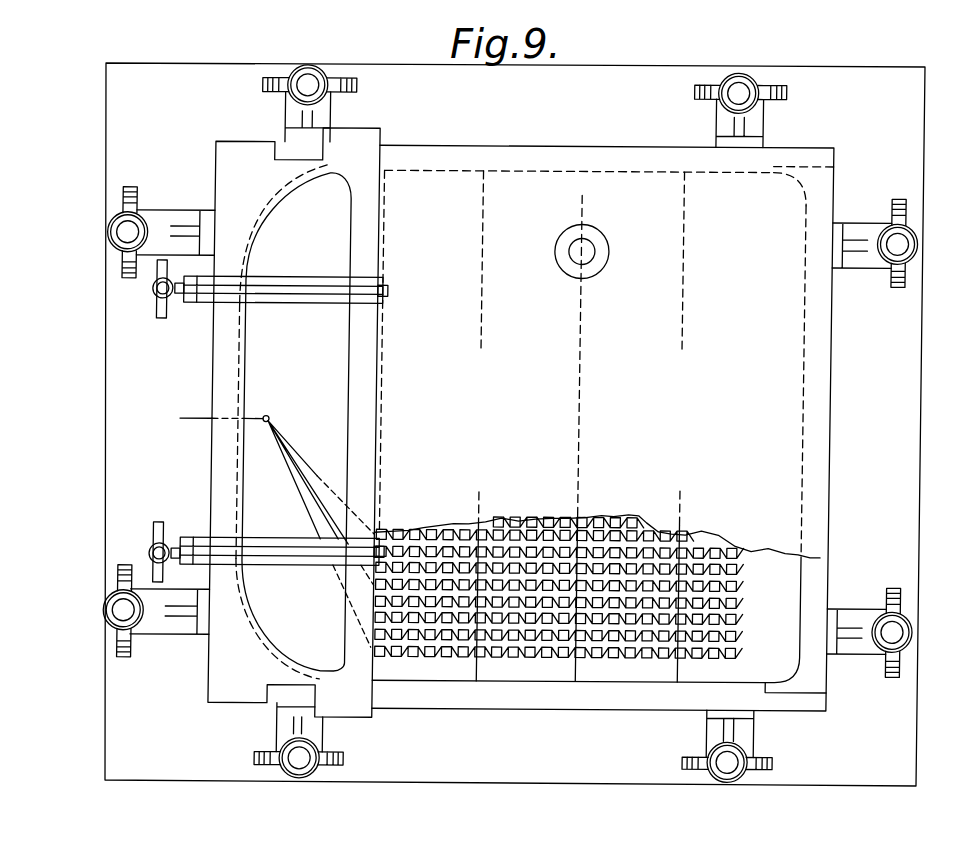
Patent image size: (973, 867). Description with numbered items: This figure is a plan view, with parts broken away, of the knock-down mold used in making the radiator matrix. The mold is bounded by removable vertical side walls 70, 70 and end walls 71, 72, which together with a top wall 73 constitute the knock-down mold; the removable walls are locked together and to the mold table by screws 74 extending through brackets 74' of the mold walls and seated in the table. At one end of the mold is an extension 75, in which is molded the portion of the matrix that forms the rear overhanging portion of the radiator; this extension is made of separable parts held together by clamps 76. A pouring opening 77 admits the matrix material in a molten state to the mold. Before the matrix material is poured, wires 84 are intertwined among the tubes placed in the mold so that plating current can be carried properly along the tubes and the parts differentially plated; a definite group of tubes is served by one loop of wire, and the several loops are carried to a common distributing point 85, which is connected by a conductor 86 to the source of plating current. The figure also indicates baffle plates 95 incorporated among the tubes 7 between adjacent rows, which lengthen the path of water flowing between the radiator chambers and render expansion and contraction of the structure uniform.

The sieve screen 7 is at (465, 658).
The removable vertical side walls 70 is at (572, 148).
The end wall 71 is at (832, 410).
The end wall 72 is at (212, 388).
The top wall 73 is at (787, 479).
The screws 74 is at (511, 423).
The brackets 74' is at (510, 425).
The extension 75 is at (221, 181).
The clamps 76 is at (283, 281).
The pouring opening 77 is at (601, 263).
The wires 84 is at (337, 573).
The common distributing point 85 is at (269, 416).
The conductor 86 is at (168, 419).
The baffle plates 95 is at (675, 670).